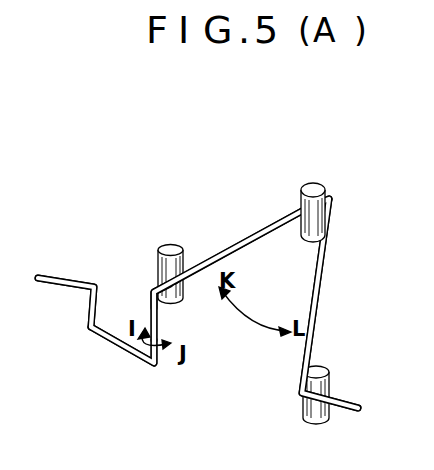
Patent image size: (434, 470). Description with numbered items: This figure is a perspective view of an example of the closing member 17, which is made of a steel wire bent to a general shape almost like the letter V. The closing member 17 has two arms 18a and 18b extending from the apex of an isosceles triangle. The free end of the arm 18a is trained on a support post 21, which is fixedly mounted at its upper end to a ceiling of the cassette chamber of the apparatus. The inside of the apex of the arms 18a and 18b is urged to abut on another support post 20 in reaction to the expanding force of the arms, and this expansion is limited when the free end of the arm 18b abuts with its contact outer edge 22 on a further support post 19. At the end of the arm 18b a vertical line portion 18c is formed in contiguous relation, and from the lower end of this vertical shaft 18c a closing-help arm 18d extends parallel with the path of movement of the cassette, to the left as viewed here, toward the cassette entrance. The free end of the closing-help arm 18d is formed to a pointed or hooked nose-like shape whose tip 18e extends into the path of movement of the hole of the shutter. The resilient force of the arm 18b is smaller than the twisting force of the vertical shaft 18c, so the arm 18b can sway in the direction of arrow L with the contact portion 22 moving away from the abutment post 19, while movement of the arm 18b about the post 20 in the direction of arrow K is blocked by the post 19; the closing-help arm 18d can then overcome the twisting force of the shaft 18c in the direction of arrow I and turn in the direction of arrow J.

The closing member 17 is at (320, 296).
The arm 18a is at (325, 247).
The arm 18b is at (239, 242).
The vertical line portion 18c is at (159, 314).
The closing-help arm 18d is at (116, 342).
The tip 18e is at (88, 283).
The support post 19 is at (172, 249).
The support post 20 is at (317, 182).
The support post 21 is at (322, 366).
The contact outer edge 22 is at (151, 288).